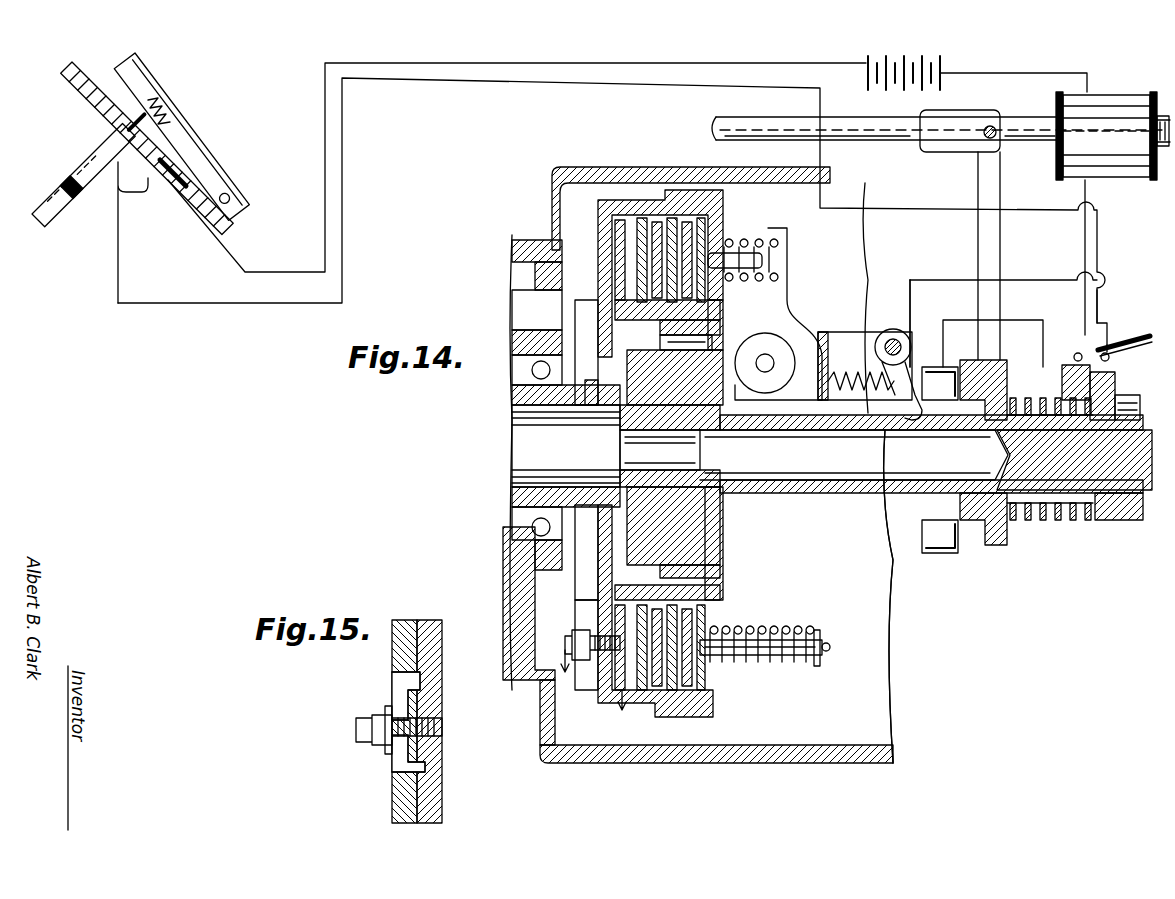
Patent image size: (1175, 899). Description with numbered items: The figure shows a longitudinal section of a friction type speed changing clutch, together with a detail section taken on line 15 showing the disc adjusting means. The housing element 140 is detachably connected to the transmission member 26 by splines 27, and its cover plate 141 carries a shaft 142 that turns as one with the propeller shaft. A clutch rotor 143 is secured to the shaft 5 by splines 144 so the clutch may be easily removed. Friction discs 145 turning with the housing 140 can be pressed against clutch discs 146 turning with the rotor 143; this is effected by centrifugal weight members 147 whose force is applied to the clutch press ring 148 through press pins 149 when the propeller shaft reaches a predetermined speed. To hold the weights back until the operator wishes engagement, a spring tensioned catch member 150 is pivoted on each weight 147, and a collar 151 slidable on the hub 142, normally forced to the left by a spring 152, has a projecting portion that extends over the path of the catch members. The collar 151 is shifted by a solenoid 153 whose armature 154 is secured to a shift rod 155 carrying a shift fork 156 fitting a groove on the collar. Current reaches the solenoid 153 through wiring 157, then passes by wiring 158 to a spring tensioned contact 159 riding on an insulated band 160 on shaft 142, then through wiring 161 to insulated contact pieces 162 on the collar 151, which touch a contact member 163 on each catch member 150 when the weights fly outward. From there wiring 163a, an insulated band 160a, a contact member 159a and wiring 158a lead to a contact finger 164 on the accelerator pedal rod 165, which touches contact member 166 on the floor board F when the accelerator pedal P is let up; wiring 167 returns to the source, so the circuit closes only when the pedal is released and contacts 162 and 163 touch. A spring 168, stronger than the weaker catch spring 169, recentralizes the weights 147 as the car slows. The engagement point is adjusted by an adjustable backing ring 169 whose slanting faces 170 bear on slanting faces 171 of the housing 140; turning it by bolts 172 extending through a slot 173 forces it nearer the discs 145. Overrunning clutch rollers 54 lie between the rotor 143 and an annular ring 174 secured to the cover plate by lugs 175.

In FIG. 14, the shaft 5 is at (525, 442).
In FIG. 14, the section line 15— 15 is at (596, 690).
In FIG. 14, the transmission member 26 is at (512, 386).
In FIG. 14, the splines 27 is at (607, 615).
In FIG. 14, the overrunning clutch rollers 54 is at (665, 340).
In FIG. 14, the housing element 140 is at (602, 250).
In FIG. 15, the housing element 140 is at (400, 808).
In FIG. 14, the cover plate 141 is at (723, 552).
In FIG. 14, the shaft 142 is at (911, 596).
In FIG. 14, the clutch rotor 143 is at (700, 516).
In FIG. 14, the splines 144 is at (700, 455).
In FIG. 14, the friction discs 145 is at (650, 215).
In FIG. 14, the clutch discs 146 is at (723, 598).
In FIG. 14, the centrifugal weight members 147 is at (796, 330).
In FIG. 14, the clutch press ring 148 is at (700, 200).
In FIG. 14, the press pins 149 is at (762, 262).
In FIG. 14, the catch member 150 is at (890, 330).
In FIG. 14, the collar 151 is at (932, 360).
In FIG. 14, the spring 152 is at (1036, 522).
In FIG. 14, the solenoid 153 is at (1105, 98).
In FIG. 14, the armature 154 is at (1160, 178).
In FIG. 14, the shift rod 155 is at (751, 122).
In FIG. 14, the shift fork 156 is at (1003, 250).
In FIG. 14, the wiring 157 is at (996, 74).
In FIG. 14, the wiring 158 is at (1078, 195).
In FIG. 14, the wiring 158a is at (1100, 262).
In FIG. 14, the spring tensioned contact 159 is at (1122, 340).
In FIG. 14, the contact member 159a is at (1130, 340).
In FIG. 14, the insulated band 160 is at (1068, 360).
In FIG. 14, the insulated band 160a is at (1110, 378).
In FIG. 14, the wiring 161 is at (1030, 320).
In FIG. 14, the contact pieces 162 is at (940, 367).
In FIG. 14, the contact member 163 is at (928, 415).
In FIG. 14, the wiring 163a is at (942, 280).
In FIG. 14, the contact finger 164 is at (140, 195).
In FIG. 14, the accelerator pedal rod 165 is at (48, 228).
In FIG. 14, the contact member 166 is at (168, 190).
In FIG. 14, the wiring 167 is at (631, 72).
In FIG. 14, the spring 168 is at (735, 240).
In FIG. 14, the adjustable backing ring 169 is at (850, 372).
In FIG. 15, the adjustable backing ring 169 is at (430, 790).
In FIG. 15, the slanting faces 170 is at (440, 688).
In FIG. 15, the slanting faces 171 is at (400, 765).
In FIG. 14, the bolts 172 is at (570, 645).
In FIG. 15, the bolts 172 is at (356, 722).
In FIG. 15, the slot 173 is at (385, 740).
In FIG. 14, the annular ring 174 is at (722, 576).
In FIG. 14, the lugs 175 is at (725, 335).
In FIG. 14, the floor board F is at (86, 96).
In FIG. 14, the accelerator pedal P is at (185, 112).